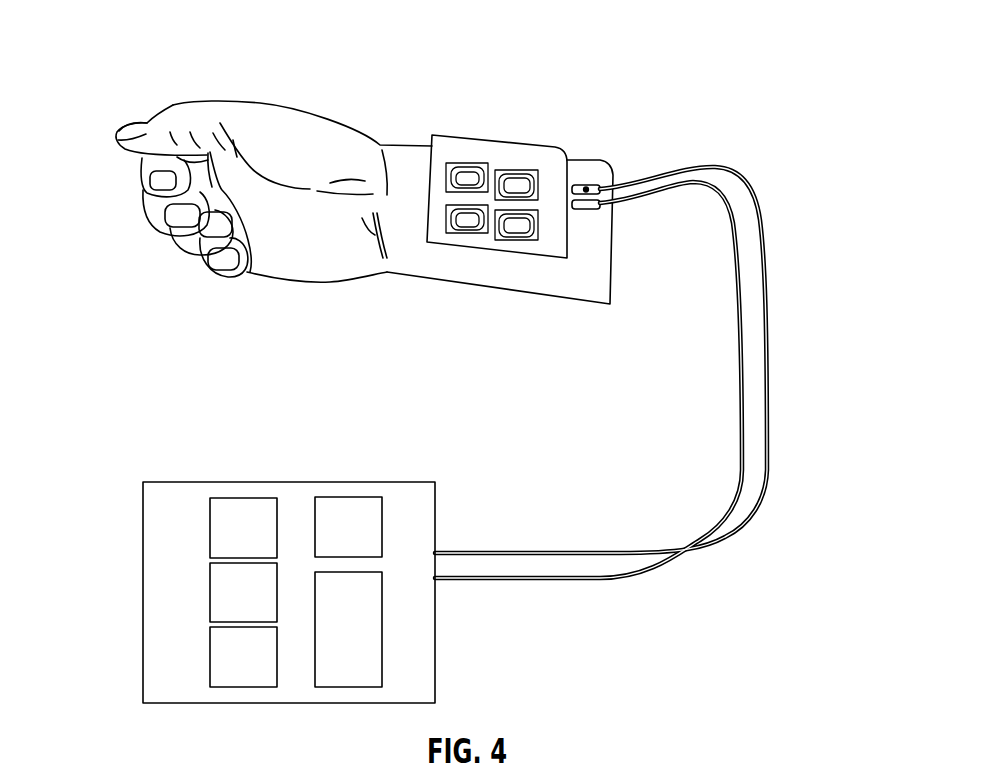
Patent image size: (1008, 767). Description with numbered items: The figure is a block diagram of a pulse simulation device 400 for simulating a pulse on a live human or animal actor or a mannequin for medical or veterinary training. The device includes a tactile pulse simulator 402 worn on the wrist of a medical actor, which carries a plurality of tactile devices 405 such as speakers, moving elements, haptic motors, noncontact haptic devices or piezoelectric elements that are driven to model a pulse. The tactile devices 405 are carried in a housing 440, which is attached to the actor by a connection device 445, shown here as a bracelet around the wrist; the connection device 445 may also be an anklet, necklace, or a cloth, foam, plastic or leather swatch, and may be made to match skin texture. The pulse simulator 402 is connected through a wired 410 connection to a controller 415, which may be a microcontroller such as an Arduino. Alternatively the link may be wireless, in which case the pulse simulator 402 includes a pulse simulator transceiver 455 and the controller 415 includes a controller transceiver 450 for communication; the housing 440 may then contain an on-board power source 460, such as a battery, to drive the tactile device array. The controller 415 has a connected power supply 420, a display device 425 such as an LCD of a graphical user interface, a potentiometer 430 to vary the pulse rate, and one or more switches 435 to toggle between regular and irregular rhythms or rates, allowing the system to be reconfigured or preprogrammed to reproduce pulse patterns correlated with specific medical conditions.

The pulse simulation device 400 is at (590, 51).
The tactile pulse simulator 402 is at (515, 271).
The tactile device 405 is at (470, 178).
The wired connection 410 is at (730, 173).
The controller 415 is at (194, 606).
The power supply 420 is at (265, 543).
The display device 425 is at (265, 608).
The potentiometer 430 is at (265, 673).
The switch 435 is at (370, 648).
The housing 440 is at (522, 157).
The connection device 445 is at (550, 185).
The controller transceiver 450 is at (517, 226).
The pulse simulator transceiver 455 is at (468, 222).
The on-board power source 460 is at (370, 542).